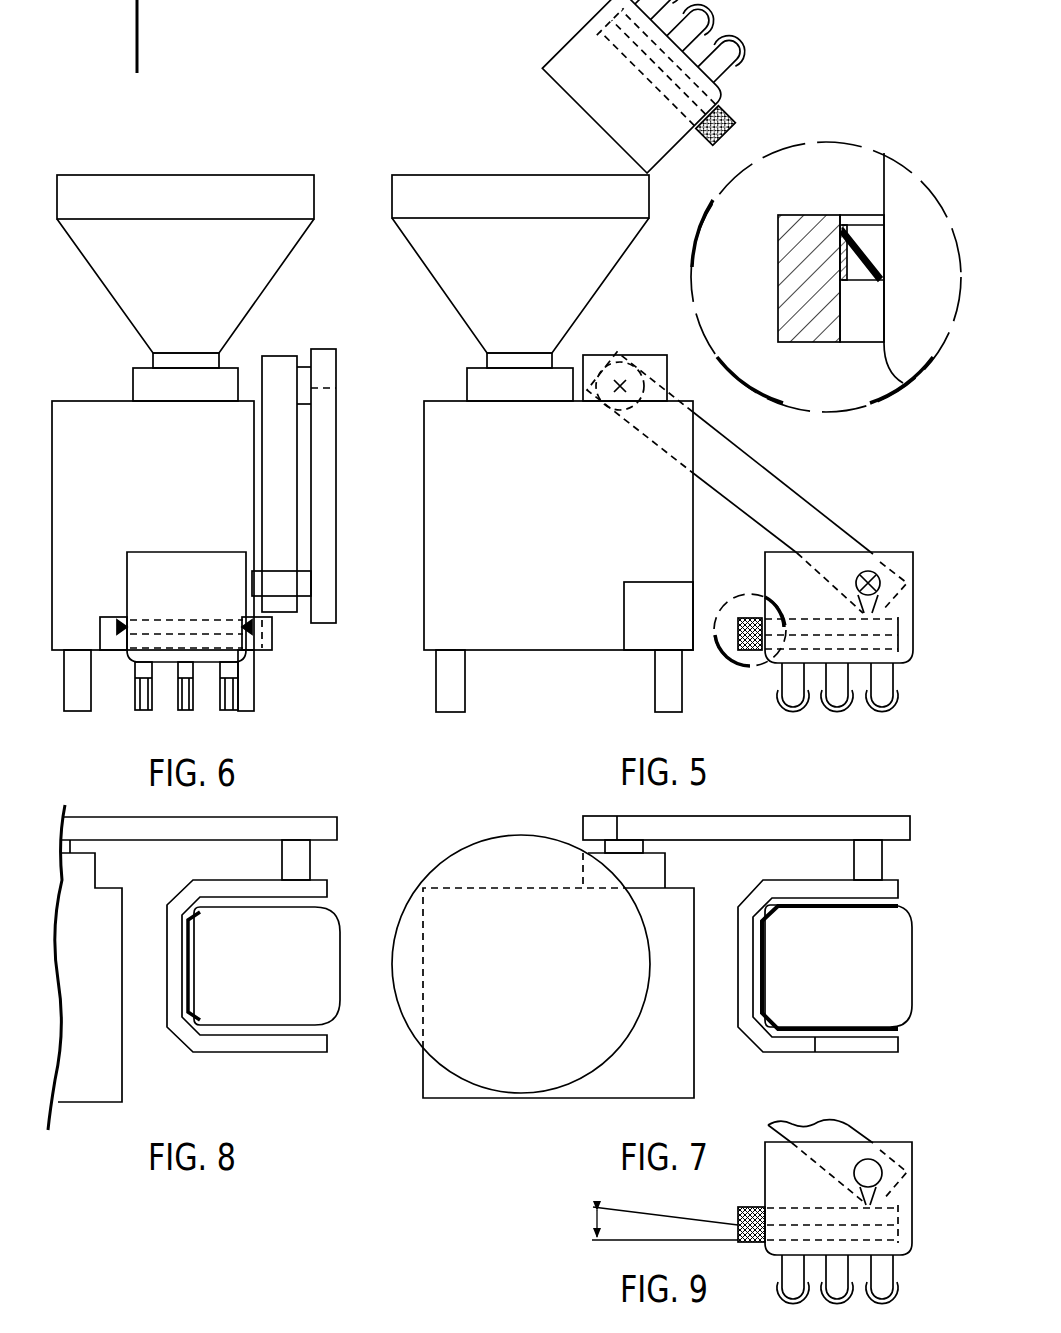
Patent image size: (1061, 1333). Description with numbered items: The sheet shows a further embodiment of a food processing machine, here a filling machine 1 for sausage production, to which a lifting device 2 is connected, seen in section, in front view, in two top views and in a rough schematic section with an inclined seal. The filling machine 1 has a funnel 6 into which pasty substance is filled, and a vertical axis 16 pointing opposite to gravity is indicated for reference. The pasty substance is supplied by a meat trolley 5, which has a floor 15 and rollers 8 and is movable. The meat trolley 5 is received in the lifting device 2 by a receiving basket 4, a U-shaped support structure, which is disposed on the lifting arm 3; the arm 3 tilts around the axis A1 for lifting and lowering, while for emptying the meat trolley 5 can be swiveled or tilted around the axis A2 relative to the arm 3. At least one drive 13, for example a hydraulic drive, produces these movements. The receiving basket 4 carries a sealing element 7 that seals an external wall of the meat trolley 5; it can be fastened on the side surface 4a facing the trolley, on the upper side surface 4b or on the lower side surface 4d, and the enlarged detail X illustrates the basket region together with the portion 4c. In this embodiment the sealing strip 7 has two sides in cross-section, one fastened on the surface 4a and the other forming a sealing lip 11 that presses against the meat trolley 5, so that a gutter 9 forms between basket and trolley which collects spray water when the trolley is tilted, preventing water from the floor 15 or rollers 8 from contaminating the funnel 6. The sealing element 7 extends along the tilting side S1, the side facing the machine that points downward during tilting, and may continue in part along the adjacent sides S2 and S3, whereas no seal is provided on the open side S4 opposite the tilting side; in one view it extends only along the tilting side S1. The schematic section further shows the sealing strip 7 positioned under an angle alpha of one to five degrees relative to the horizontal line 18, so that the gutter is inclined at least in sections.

In FIG. 6, the filling machine 1 is at (258, 163).
In FIG. 5, the filling machine 1 is at (450, 164).
In FIG. 6, the lifting device 2 is at (290, 614).
In FIG. 5, the lifting device 2 is at (795, 503).
In FIG. 5, the lifting arm 3 is at (760, 504).
In FIG. 8, the lifting arm 3 is at (337, 825).
In FIG. 7, the lifting arm 3 is at (910, 824).
In FIG. 6, the receiving basket 4 is at (115, 646).
In FIG. 5, the receiving basket 4 is at (760, 653).
In FIG. 8, the receiving basket 4 is at (226, 1052).
In FIG. 7, the receiving basket 4 is at (848, 1052).
In FIG. 9, the receiving basket 4 is at (745, 1243).
In FIG. 5, the side surface facing the meat trolley 4a is at (862, 342).
In FIG. 5, the upper side surface 4b is at (795, 215).
In FIG. 5, the holder part 4c is at (778, 285).
In FIG. 5, the lower side surface 4d is at (820, 342).
In FIG. 6, the meat trolley 5 is at (206, 558).
In FIG. 5, the meat trolley 5 is at (598, 108).
In FIG. 8, the meat trolley 5 is at (332, 1007).
In FIG. 7, the meat trolley 5 is at (903, 1007).
In FIG. 6, the funnel 6 is at (104, 286).
In FIG. 5, the funnel 6 is at (438, 286).
In FIG. 7, the funnel 6 is at (565, 1065).
In FIG. 6, the sealing element 7 is at (120, 618).
In FIG. 5, the sealing element 7 is at (863, 223).
In FIG. 8, the sealing element 7 is at (180, 926).
In FIG. 7, the sealing element 7 is at (815, 1052).
In FIG. 6, the rollers 8 is at (229, 713).
In FIG. 5, the rollers 8 is at (790, 718).
In FIG. 5, the gutter 9 is at (857, 278).
In FIG. 5, the sealing lip 11 is at (884, 263).
In FIG. 5, the drive 13 is at (678, 633).
In FIG. 6, the floor 15 is at (198, 668).
In FIG. 5, the floor 15 is at (860, 670).
In FIG. 6, the vertical axis 16 is at (139, 13).
In FIG. 9, the horizontal line 18 is at (594, 1241).
In FIG. 5, the axis A1 is at (627, 360).
In FIG. 5, the axis A2 is at (870, 553).
In FIG. 5, the tilting side S1 is at (678, 150).
In FIG. 7, the tilting side S1 is at (738, 962).
In FIG. 7, the side adjacent to the tilting side S2 is at (778, 1052).
In FIG. 7, the side adjacent to the tilting side S3 is at (778, 880).
In FIG. 7, the open side S4 is at (912, 962).
In FIG. 5, the detail X is at (826, 404).
In FIG. 9, the angle alpha is at (608, 1225).